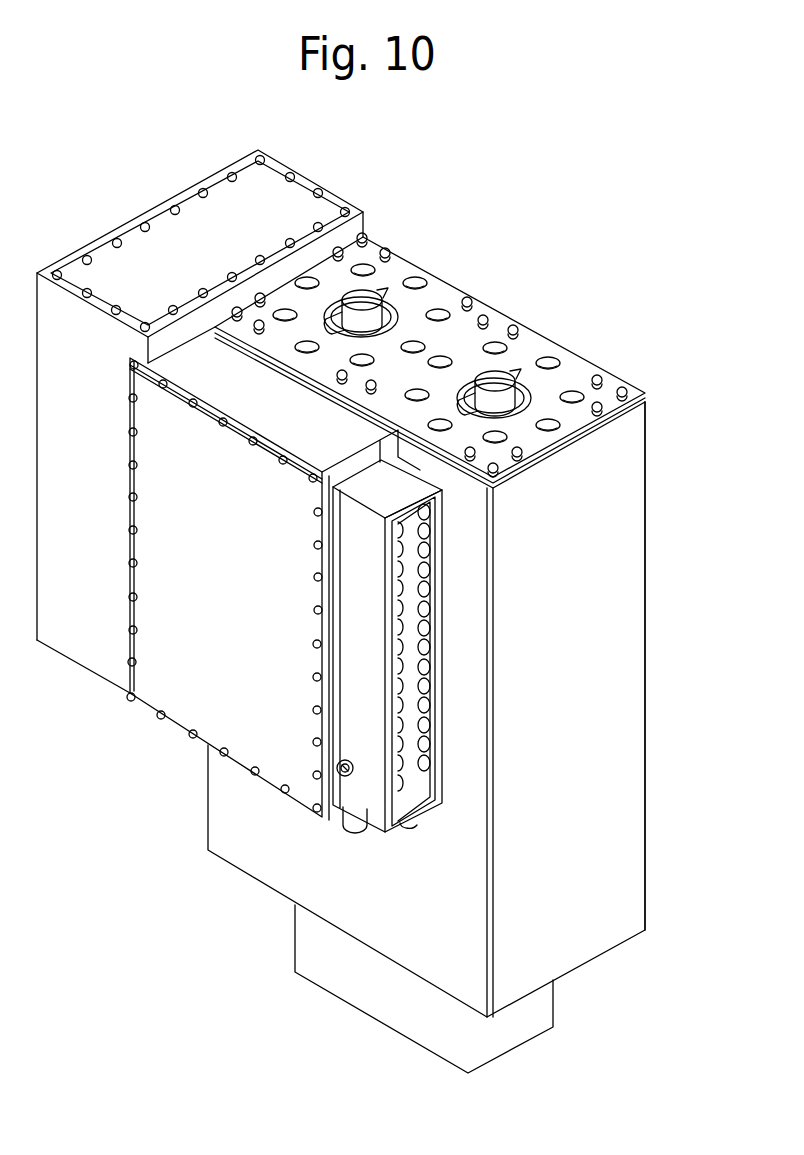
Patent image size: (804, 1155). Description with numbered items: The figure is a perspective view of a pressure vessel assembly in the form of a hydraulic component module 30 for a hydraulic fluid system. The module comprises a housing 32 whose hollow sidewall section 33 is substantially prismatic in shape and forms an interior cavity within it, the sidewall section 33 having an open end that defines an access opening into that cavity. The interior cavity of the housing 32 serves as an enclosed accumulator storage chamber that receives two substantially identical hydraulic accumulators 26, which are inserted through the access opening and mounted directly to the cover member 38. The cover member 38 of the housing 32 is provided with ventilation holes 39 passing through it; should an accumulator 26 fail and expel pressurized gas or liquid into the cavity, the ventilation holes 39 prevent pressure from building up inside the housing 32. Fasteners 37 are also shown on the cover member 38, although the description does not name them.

The hydraulic accumulator 26 is at (364, 302).
The hydraulic component module 30 is at (495, 268).
The housing 32 is at (648, 666).
The sidewall section 33 is at (630, 517).
The fastener 37 is at (627, 391).
The cover member 38 is at (553, 380).
The ventilation hole 39 is at (553, 432).